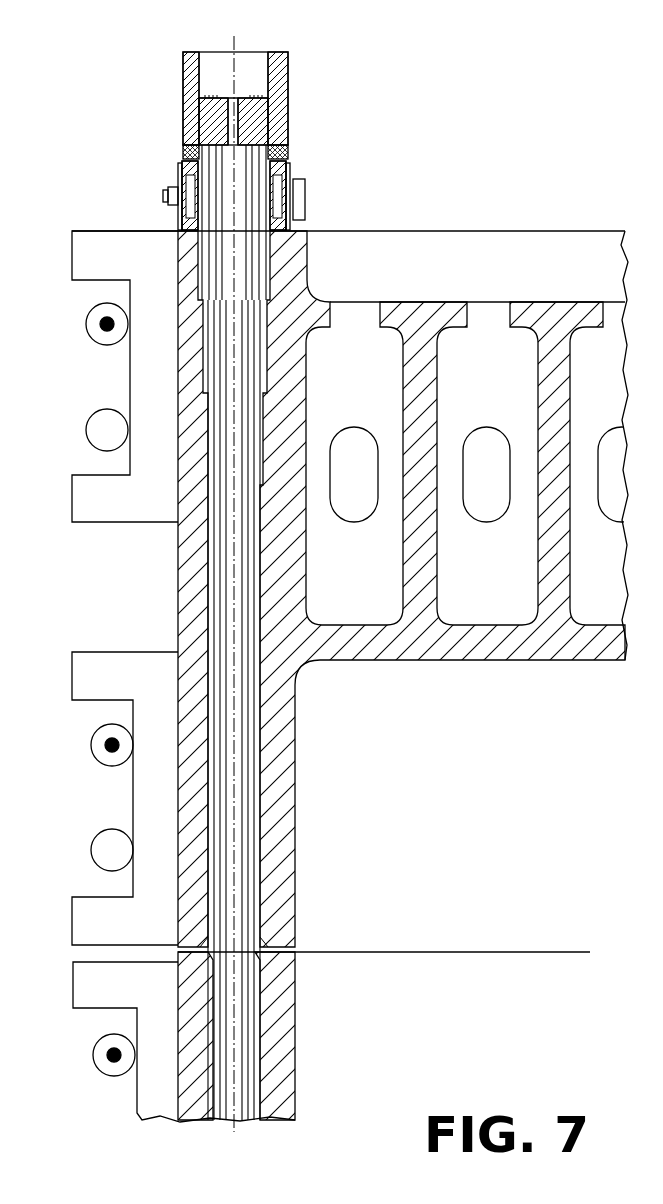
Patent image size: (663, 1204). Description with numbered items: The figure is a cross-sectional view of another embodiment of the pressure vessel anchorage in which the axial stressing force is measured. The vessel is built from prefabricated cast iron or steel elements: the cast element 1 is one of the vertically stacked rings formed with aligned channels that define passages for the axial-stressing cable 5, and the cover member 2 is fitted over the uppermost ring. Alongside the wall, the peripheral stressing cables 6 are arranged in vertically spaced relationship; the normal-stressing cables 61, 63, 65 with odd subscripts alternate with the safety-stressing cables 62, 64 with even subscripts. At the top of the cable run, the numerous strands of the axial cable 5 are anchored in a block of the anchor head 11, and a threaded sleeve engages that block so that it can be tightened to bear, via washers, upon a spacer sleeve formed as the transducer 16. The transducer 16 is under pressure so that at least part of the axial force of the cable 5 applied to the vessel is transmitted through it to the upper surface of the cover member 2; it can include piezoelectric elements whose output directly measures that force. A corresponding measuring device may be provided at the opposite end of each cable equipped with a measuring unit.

The cast element 1 is at (282, 1028).
The cover member 2 is at (490, 381).
The axial-stressing cable 5 is at (237, 773).
The stressing cables 6 is at (72, 686).
The normal-stressing cable 61 is at (86, 323).
The safety-stressing cable 62 is at (86, 430).
The normal-stressing cable 63 is at (91, 745).
The safety-stressing cable 64 is at (91, 850).
The normal-stressing cable 65 is at (93, 1052).
The anchor head 11 is at (278, 97).
The transducer 16 is at (282, 193).